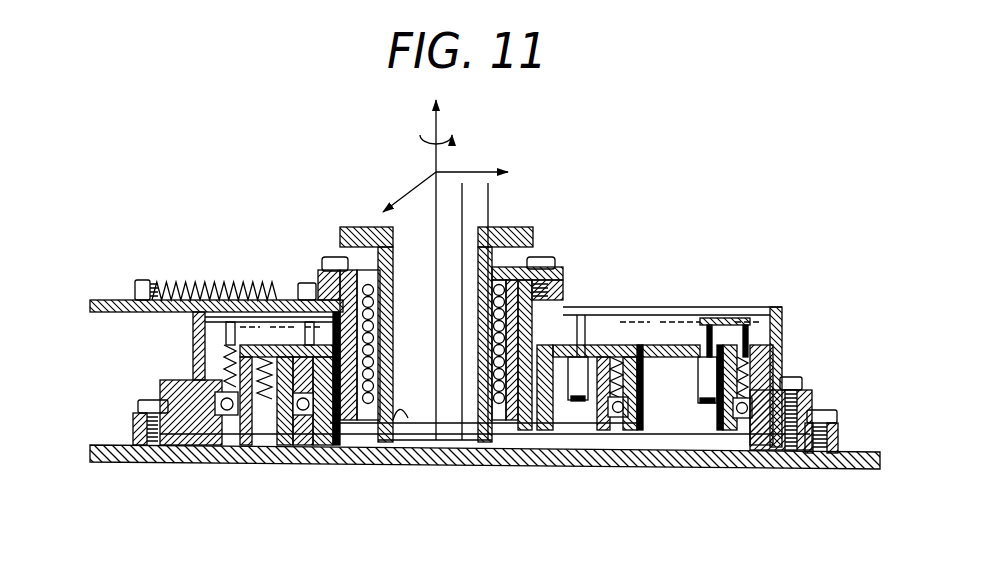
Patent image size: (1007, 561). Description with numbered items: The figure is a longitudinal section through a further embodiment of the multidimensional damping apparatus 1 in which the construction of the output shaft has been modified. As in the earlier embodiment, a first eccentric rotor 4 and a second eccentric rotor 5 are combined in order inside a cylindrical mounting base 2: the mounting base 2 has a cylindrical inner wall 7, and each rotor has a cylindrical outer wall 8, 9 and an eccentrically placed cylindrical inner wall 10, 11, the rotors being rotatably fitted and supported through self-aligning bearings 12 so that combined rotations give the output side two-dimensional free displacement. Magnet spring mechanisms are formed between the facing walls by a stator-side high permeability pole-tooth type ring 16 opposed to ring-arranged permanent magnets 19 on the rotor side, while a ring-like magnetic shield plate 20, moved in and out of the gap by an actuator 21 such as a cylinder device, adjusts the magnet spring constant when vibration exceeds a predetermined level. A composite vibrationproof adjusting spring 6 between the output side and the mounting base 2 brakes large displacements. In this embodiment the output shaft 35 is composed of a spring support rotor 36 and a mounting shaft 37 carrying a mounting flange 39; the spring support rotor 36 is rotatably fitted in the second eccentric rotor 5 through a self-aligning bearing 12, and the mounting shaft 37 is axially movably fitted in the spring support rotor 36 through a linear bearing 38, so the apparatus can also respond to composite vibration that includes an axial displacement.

The rotary table assembly 1 is at (592, 276).
The mounting base 2 is at (792, 470).
The first eccentric rotor 4 is at (730, 470).
The second eccentric rotor 5 is at (600, 432).
The composite vibrationproof adjusting spring 6 is at (175, 281).
The cylindrical inner wall 7 is at (768, 470).
The cylindrical outer wall 8 is at (738, 462).
The cylindrical outer wall 9 is at (611, 455).
The cylindrical inner wall 10 is at (630, 465).
The cylindrical inner wall 11 is at (338, 445).
The self-aligning bearing 12 is at (236, 445).
The high permeability pole-tooth type ring 16 is at (760, 322).
The permanent magnet 19 is at (728, 320).
The magnetic shield plate 20 is at (735, 325).
The actuator 21 is at (700, 398).
The output shaft 35 is at (542, 238).
The spring support rotor 36 is at (332, 268).
The mounting shaft 37 is at (405, 440).
The linear bearing 38 is at (362, 275).
The mounting flange 39 is at (497, 235).